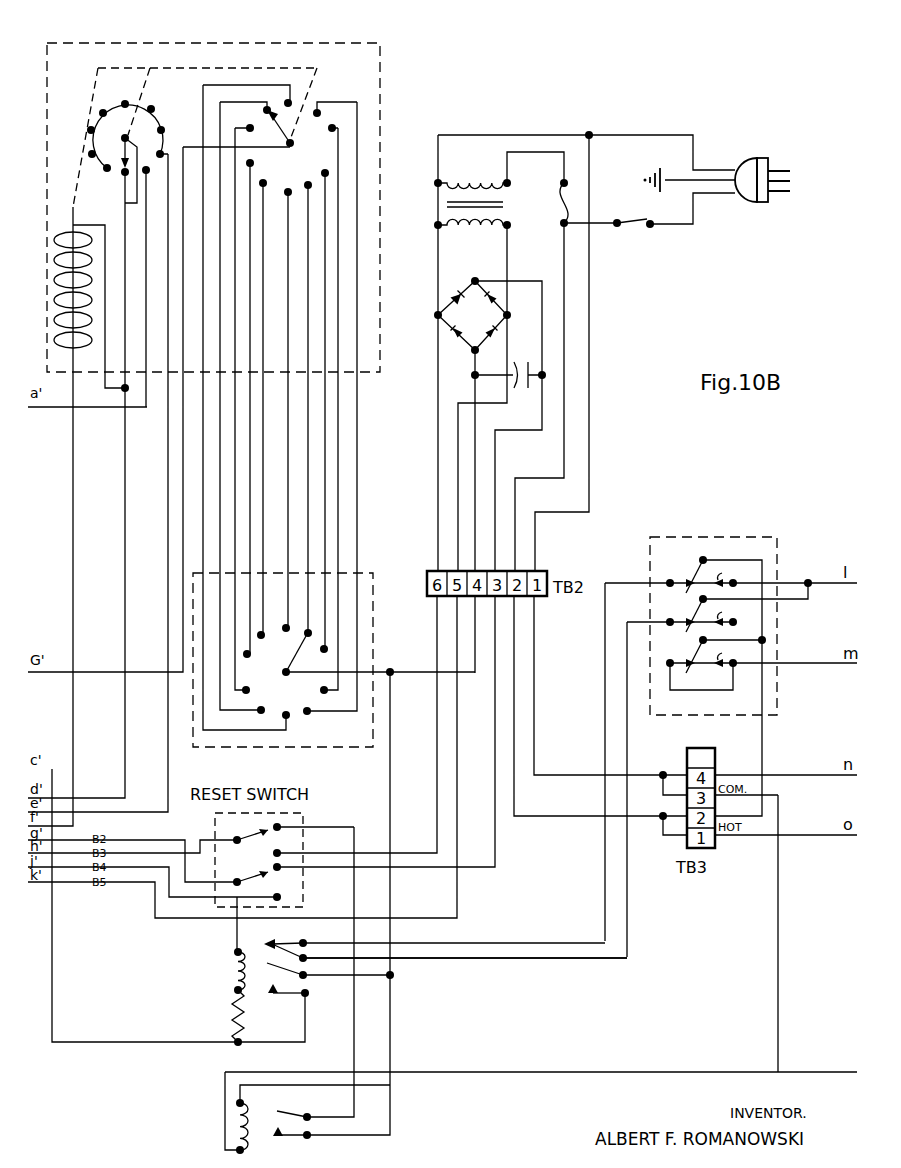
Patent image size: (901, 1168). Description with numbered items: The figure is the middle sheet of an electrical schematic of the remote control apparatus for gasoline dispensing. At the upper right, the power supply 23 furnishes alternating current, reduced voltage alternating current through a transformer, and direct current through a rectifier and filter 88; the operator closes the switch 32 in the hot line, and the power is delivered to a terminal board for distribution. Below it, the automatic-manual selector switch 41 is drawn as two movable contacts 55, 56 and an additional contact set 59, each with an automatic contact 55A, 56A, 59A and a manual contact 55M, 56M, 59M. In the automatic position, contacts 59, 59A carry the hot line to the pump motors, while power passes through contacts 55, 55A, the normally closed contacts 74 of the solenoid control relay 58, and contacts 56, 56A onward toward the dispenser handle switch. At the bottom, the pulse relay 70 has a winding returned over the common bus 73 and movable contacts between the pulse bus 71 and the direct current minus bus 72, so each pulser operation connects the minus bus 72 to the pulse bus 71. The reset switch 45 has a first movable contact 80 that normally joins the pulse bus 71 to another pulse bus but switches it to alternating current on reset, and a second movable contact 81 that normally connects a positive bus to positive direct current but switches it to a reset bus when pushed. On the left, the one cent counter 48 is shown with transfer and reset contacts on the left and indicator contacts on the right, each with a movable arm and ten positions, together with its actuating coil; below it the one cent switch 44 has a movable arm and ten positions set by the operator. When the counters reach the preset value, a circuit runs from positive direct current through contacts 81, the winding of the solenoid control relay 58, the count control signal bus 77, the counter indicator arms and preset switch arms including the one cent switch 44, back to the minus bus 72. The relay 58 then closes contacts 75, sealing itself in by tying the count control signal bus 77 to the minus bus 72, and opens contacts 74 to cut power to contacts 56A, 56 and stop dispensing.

The one cent counter 48 is at (338, 50).
The one cent switch 44 is at (370, 790).
The reset switch 45 is at (295, 829).
The first movable contact 80 is at (335, 730).
The second movable contact 81 is at (364, 748).
The contacts 74 is at (294, 938).
The contacts 75 is at (267, 978).
The solenoid control relay 58 is at (235, 972).
The count control signal bus 77 is at (165, 1045).
The pulse bus 71 is at (352, 1042).
The minus bus 72 is at (392, 1046).
The common bus 73 is at (665, 1078).
The pulse relay 70 is at (292, 1163).
The power supply 23 is at (649, 319).
The switch 32 is at (653, 228).
The rectifier and filter 88 is at (485, 326).
The automatic-manual selector switch 41 is at (832, 530).
The movable contact 55 is at (731, 575).
The automatic contact 55A is at (660, 583).
The manual contact 55M is at (742, 576).
The movable contact 56 is at (680, 612).
The automatic contact 56A is at (660, 622).
The manual contact 56M is at (742, 615).
The contacts 59 is at (763, 662).
The automatic contact 59A is at (668, 663).
The manual contact 59M is at (742, 656).